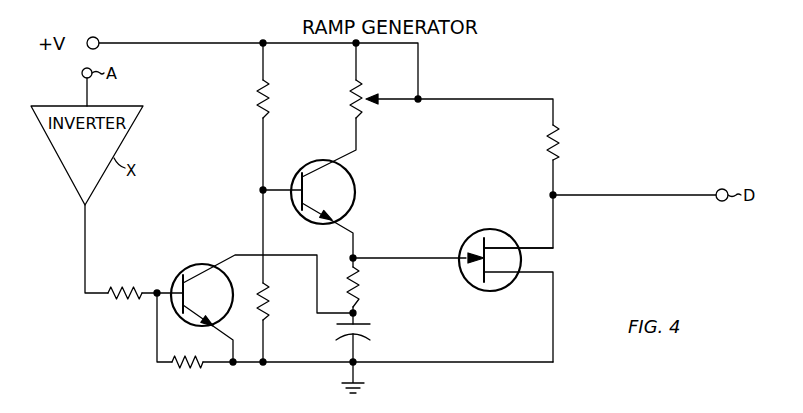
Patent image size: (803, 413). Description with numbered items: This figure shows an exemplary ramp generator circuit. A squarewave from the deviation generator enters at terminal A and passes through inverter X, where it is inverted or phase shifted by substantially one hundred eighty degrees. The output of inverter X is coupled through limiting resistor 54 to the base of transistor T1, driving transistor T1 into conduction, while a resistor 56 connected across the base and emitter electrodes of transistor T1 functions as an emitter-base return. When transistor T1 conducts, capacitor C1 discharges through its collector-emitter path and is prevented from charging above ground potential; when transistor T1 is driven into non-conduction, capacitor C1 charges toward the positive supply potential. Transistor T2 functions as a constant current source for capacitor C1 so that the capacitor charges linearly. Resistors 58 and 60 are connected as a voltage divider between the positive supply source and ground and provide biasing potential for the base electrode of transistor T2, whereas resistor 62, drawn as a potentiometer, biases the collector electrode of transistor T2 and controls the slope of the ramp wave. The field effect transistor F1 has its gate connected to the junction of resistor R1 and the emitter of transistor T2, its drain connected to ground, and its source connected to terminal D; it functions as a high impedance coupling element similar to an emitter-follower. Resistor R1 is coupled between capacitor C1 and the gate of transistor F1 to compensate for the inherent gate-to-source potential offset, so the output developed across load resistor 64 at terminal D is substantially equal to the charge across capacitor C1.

The limiting resistor 54 is at (131, 289).
The resistor 56 is at (187, 376).
The resistor 58 is at (257, 97).
The resistor 60 is at (269, 303).
The resistor 62 is at (349, 98).
The load resistor 64 is at (558, 146).
The transistor T1 is at (262, 308).
The transistor T2 is at (323, 209).
The field effect transistor F1 is at (506, 295).
The resistor R1 is at (357, 292).
The capacitor C1 is at (370, 334).